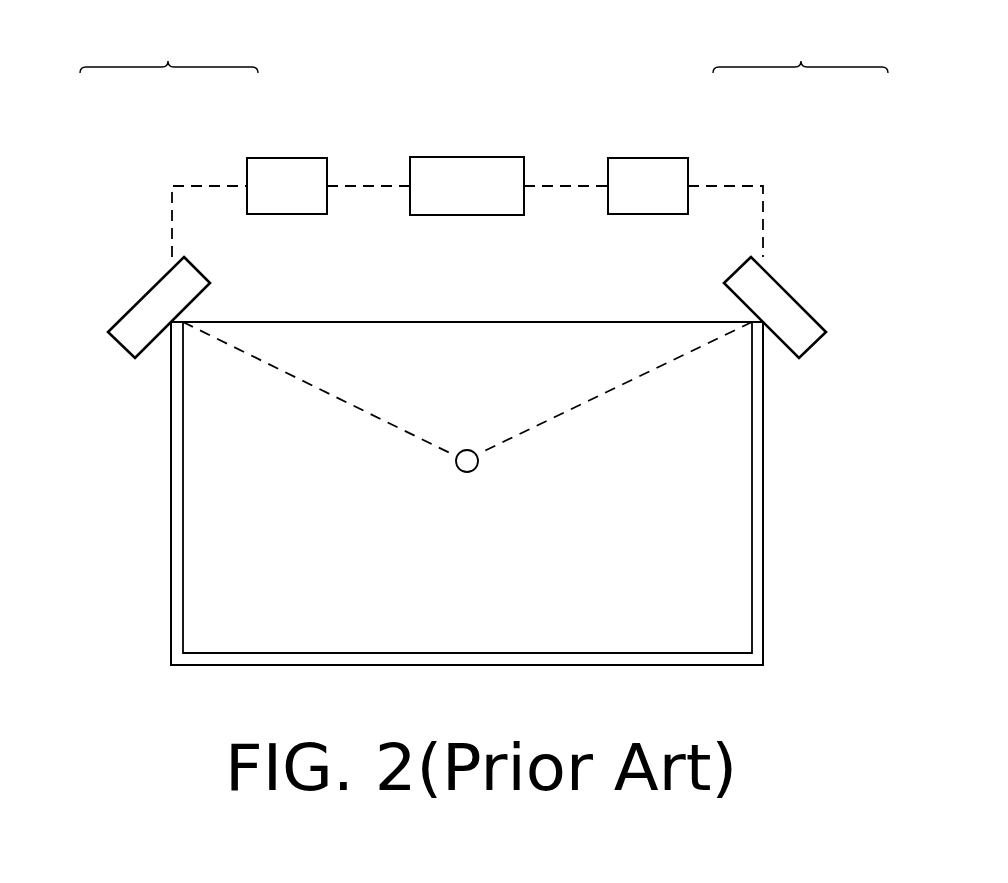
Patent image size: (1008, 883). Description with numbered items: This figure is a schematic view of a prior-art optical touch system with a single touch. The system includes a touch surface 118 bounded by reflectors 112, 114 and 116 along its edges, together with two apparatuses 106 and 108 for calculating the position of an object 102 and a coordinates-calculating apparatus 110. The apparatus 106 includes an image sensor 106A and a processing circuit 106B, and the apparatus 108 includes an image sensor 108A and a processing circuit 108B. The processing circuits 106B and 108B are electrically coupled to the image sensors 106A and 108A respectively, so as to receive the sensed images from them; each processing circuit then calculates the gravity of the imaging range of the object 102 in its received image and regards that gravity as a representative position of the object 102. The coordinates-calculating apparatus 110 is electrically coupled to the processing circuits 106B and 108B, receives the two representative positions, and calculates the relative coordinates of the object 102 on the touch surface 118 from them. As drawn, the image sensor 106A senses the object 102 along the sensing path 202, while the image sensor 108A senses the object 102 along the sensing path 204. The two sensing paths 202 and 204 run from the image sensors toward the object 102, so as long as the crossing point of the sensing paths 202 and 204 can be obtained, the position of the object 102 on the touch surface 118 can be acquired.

The object 102 is at (467, 472).
The apparatus for calculating the position of an object 106 is at (169, 50).
The image sensor 106A is at (129, 328).
The processing circuit 106B is at (272, 168).
The apparatus for calculating the position of an object 108 is at (800, 50).
The image sensor 108A is at (798, 320).
The processing circuit 108B is at (672, 175).
The coordinates-calculating apparatus 110 is at (466, 157).
The reflector 112 is at (175, 490).
The reflector 114 is at (456, 660).
The reflector 116 is at (758, 527).
The touch surface 118 is at (195, 590).
The sensing path 202 is at (315, 388).
The sensing path 204 is at (615, 392).